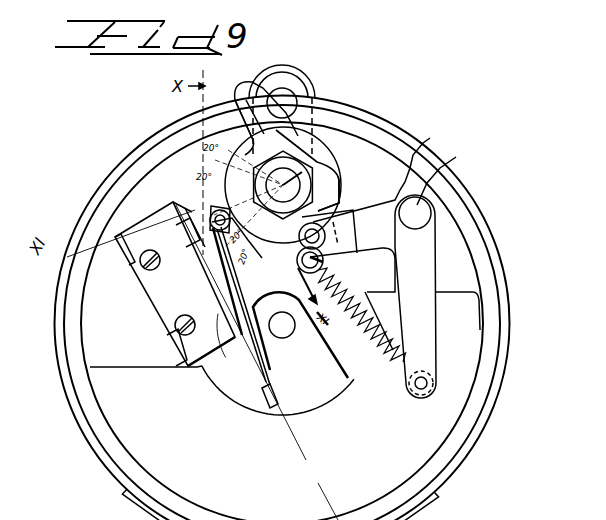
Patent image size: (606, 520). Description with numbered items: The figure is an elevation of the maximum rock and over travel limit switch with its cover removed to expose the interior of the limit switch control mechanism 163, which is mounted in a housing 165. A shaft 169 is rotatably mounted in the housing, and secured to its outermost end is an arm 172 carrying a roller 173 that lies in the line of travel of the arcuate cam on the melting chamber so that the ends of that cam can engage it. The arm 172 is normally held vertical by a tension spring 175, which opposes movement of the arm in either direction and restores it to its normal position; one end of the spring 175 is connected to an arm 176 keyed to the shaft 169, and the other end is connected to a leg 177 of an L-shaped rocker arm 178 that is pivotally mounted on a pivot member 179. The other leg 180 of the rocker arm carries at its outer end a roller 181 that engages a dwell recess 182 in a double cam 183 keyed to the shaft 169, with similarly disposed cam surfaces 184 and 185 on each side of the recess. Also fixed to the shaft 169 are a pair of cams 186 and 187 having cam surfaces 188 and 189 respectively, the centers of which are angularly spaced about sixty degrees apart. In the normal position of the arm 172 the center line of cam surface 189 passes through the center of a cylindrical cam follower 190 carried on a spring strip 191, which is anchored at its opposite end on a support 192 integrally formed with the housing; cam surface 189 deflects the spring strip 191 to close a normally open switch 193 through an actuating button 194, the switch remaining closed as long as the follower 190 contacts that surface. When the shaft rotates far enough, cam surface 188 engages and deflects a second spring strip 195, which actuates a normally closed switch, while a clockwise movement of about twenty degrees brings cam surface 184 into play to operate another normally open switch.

The limit switch control mechanism 163 is at (513, 232).
The housing 165 is at (474, 206).
The shaft 169 is at (305, 168).
The arm 172 is at (308, 84).
The roller 173 is at (303, 81).
The tension spring 175 is at (379, 362).
The arm 176 is at (303, 272).
The leg 177 is at (425, 334).
The L-shaped rocker arm 178 is at (413, 226).
The pivot member 179 is at (456, 174).
The leg 180 is at (390, 173).
The roller 181 is at (330, 260).
The dwell recess 182 is at (345, 215).
The double cam 183 is at (341, 181).
The cam surface 184 is at (241, 306).
The cam surface 185 is at (341, 191).
The cam 186 is at (300, 156).
The cam 187 is at (235, 290).
The cam surface 188 is at (241, 98).
The cam surface 189 is at (212, 200).
The cylindrical cam follower 190 is at (192, 210).
The spring strip 191 is at (187, 233).
The support 192 is at (222, 353).
The switch 193 is at (175, 284).
The actuating button 194 is at (244, 341).
The spring strip 195 is at (169, 292).